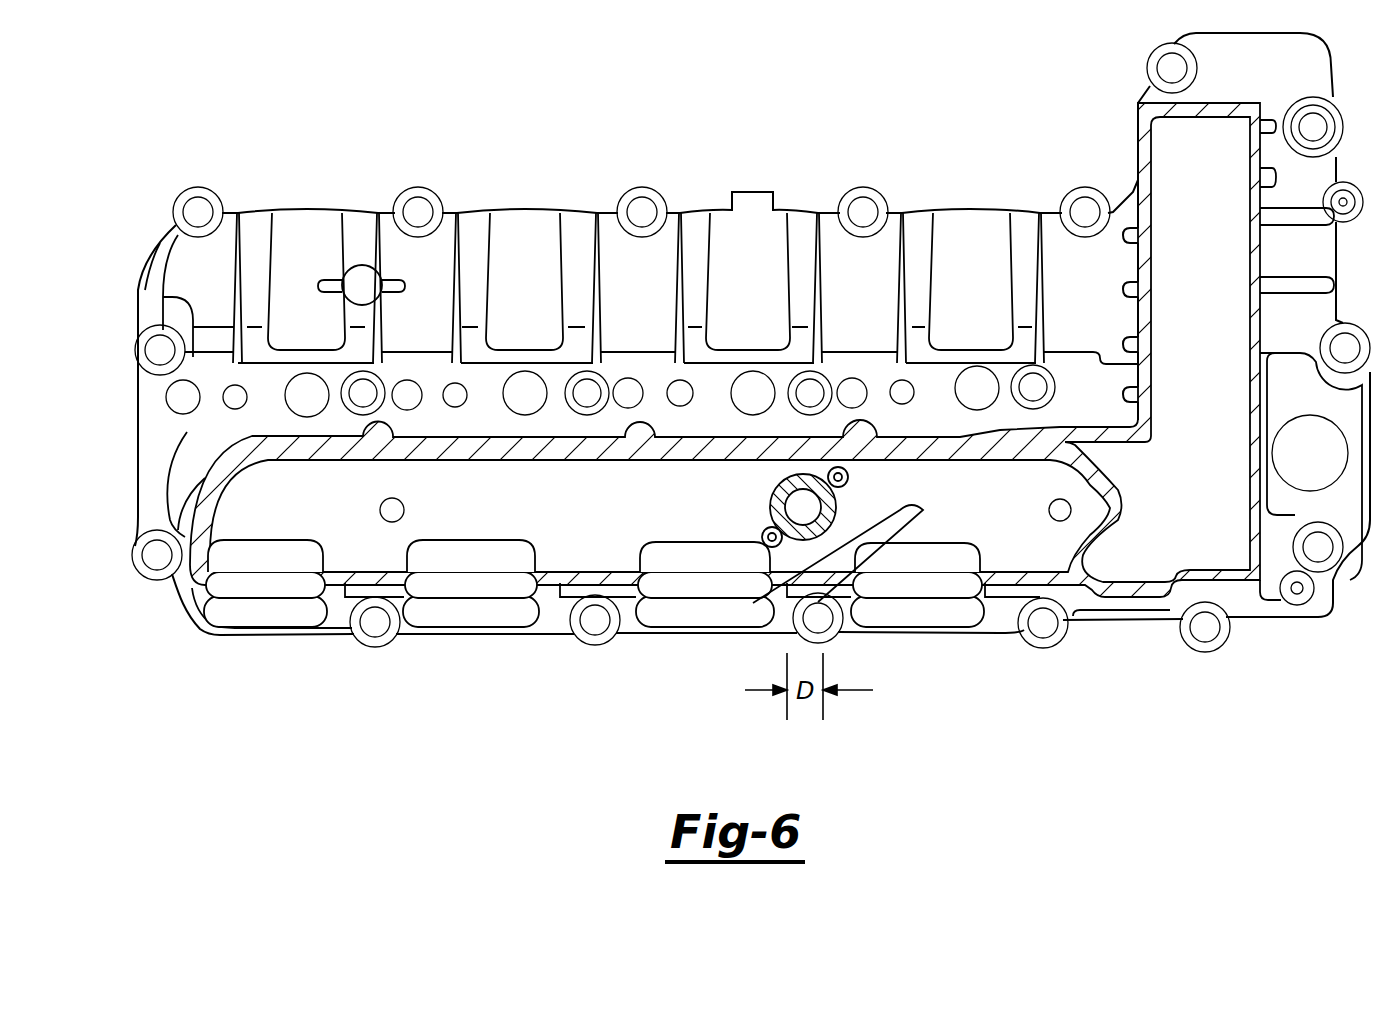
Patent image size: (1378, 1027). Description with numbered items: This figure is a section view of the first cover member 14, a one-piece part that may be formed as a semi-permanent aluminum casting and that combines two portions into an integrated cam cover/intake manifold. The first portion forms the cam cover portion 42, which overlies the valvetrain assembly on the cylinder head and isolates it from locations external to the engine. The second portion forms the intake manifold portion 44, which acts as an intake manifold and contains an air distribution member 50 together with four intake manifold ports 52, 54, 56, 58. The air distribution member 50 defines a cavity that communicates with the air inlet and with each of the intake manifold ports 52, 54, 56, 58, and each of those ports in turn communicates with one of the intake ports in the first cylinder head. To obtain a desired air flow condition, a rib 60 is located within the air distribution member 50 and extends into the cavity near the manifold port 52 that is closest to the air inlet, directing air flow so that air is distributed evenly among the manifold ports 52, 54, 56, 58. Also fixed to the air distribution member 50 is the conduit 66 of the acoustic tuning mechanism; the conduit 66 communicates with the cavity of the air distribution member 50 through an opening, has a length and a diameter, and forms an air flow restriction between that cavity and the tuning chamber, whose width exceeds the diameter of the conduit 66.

The first cover member 14 is at (509, 128).
The cam cover portion 42 is at (147, 288).
The intake manifold portion 44 is at (182, 602).
The air distribution member 50 is at (258, 503).
The intake manifold port 52 is at (957, 573).
The intake manifold port 54 is at (692, 573).
The intake manifold port 56 is at (505, 572).
The intake manifold port 58 is at (290, 572).
The rib 60 is at (873, 530).
The conduit 66 is at (840, 500).